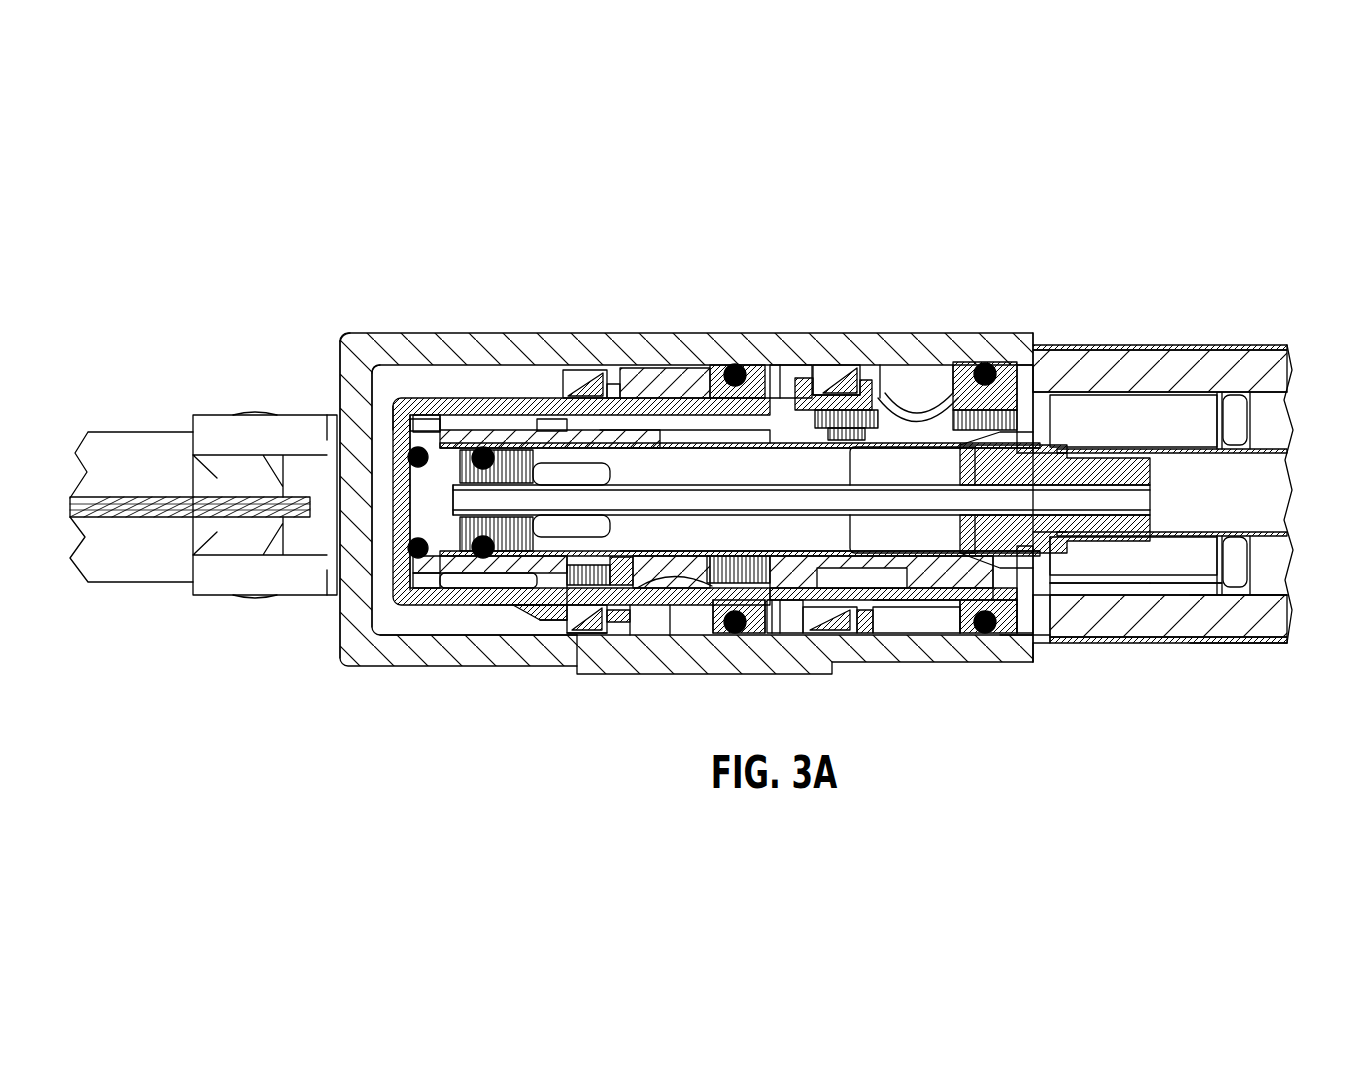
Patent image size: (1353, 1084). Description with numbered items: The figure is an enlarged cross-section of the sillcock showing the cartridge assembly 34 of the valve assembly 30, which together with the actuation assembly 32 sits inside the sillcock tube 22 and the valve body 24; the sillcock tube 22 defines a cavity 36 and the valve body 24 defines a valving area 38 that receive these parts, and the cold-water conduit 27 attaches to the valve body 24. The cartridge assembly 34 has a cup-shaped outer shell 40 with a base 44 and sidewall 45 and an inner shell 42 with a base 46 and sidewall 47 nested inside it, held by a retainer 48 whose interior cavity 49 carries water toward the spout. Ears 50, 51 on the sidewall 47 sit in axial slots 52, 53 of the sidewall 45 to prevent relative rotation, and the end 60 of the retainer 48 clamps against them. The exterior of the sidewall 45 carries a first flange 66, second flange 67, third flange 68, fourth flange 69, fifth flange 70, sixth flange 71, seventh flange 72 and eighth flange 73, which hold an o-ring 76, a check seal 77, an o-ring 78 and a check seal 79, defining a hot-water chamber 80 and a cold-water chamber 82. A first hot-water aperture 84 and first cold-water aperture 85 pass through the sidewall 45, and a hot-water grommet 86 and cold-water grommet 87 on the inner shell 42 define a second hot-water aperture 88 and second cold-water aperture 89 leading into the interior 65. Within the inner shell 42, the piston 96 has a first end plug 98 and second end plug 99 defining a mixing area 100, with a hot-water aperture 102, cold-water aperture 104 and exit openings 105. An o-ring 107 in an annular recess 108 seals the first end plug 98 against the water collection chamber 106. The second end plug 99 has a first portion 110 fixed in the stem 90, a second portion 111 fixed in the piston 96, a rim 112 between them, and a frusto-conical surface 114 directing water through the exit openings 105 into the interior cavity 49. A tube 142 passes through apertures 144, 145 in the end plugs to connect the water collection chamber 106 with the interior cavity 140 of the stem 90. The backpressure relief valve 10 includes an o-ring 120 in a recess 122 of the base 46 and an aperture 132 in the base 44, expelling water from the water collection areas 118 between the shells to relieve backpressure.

The backpressure relief valve 10 is at (423, 615).
The sillcock tube 22 is at (1205, 345).
The valve body 24 is at (533, 355).
The cold-water conduit 27 is at (130, 452).
The valve assembly 30 is at (1075, 432).
The actuation assembly 32 is at (1267, 443).
The cartridge assembly 34 is at (422, 638).
The cavity 36 is at (1160, 350).
The valving area 38 is at (360, 625).
The outer shell 40 is at (405, 420).
The inner shell 42 is at (483, 437).
The base 44 is at (355, 380).
The sidewall 45 is at (462, 445).
The base 46 is at (505, 605).
The sidewall 47 is at (547, 400).
The retainer 48 is at (1275, 643).
The interior cavity 49 is at (1280, 580).
The ear 50 is at (1033, 430).
The ear 51 is at (1040, 643).
The slot 52 is at (1020, 365).
The slot 53 is at (1010, 637).
The end 60 is at (1055, 440).
The interior 65 is at (545, 605).
The first flange 66 is at (1000, 638).
The second flange 67 is at (950, 638).
The third flange 68 is at (870, 633).
The fourth flange 69 is at (808, 638).
The fifth flange 70 is at (760, 633).
The sixth flange 71 is at (715, 635).
The seventh flange 72 is at (625, 638).
The eighth flange 73 is at (530, 638).
The o-ring 76 is at (975, 638).
The check seal 77 is at (840, 633).
The o-ring 78 is at (735, 636).
The check seal 79 is at (595, 633).
The hot-water chamber 80 is at (952, 365).
The cold-water chamber 82 is at (680, 638).
The first hot-water aperture 84 is at (890, 395).
The first cold-water aperture 85 is at (650, 600).
The hot-water grommet 86 is at (852, 365).
The cold-water grommet 87 is at (580, 650).
The second hot-water aperture 88 is at (918, 400).
The second cold-water aperture 89 is at (690, 525).
The stem 90 is at (1250, 643).
The piston 96 is at (700, 400).
The first end plug 98 is at (580, 397).
The second end plug 99 is at (1102, 458).
The mixing area 100 is at (790, 375).
The hot-water aperture 102 is at (805, 370).
The cold-water aperture 104 is at (650, 440).
The exit openings 105 is at (985, 362).
The water collection chamber 106 is at (396, 488).
The o-ring 107 is at (503, 437).
The annular recess 108 is at (500, 420).
The first portion 110 is at (1180, 643).
The second portion 111 is at (1140, 643).
The rim 112 is at (1200, 643).
The frusto-conical surface 114 is at (960, 455).
The water collection areas 118 is at (490, 638).
The o-ring 120 is at (393, 430).
The recess 122 is at (408, 530).
The aperture 132 is at (433, 503).
The interior cavity 140 is at (1262, 480).
The tube 142 is at (500, 580).
The aperture 144 is at (535, 505).
The aperture 145 is at (1150, 502).